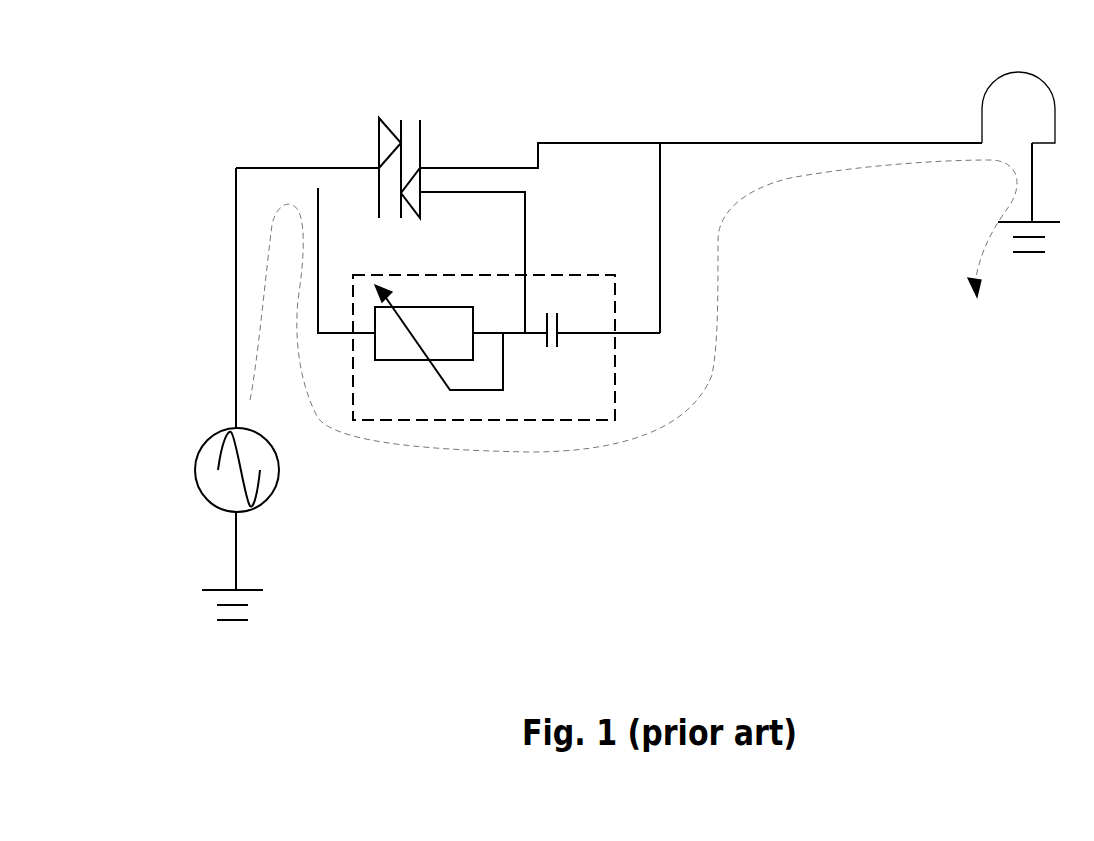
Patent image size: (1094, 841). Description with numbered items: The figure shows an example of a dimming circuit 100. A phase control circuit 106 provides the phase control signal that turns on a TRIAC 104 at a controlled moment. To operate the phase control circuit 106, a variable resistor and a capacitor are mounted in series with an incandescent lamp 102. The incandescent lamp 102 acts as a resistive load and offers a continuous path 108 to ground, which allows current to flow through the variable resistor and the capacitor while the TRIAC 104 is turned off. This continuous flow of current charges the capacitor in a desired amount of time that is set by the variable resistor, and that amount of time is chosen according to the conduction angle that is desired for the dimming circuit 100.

The dimming circuit 100 is at (188, 104).
The incandescent lamp 102 is at (1015, 72).
The TRIAC 104 is at (420, 104).
The phase control circuit 106 is at (485, 271).
The continuous path 108 is at (709, 401).